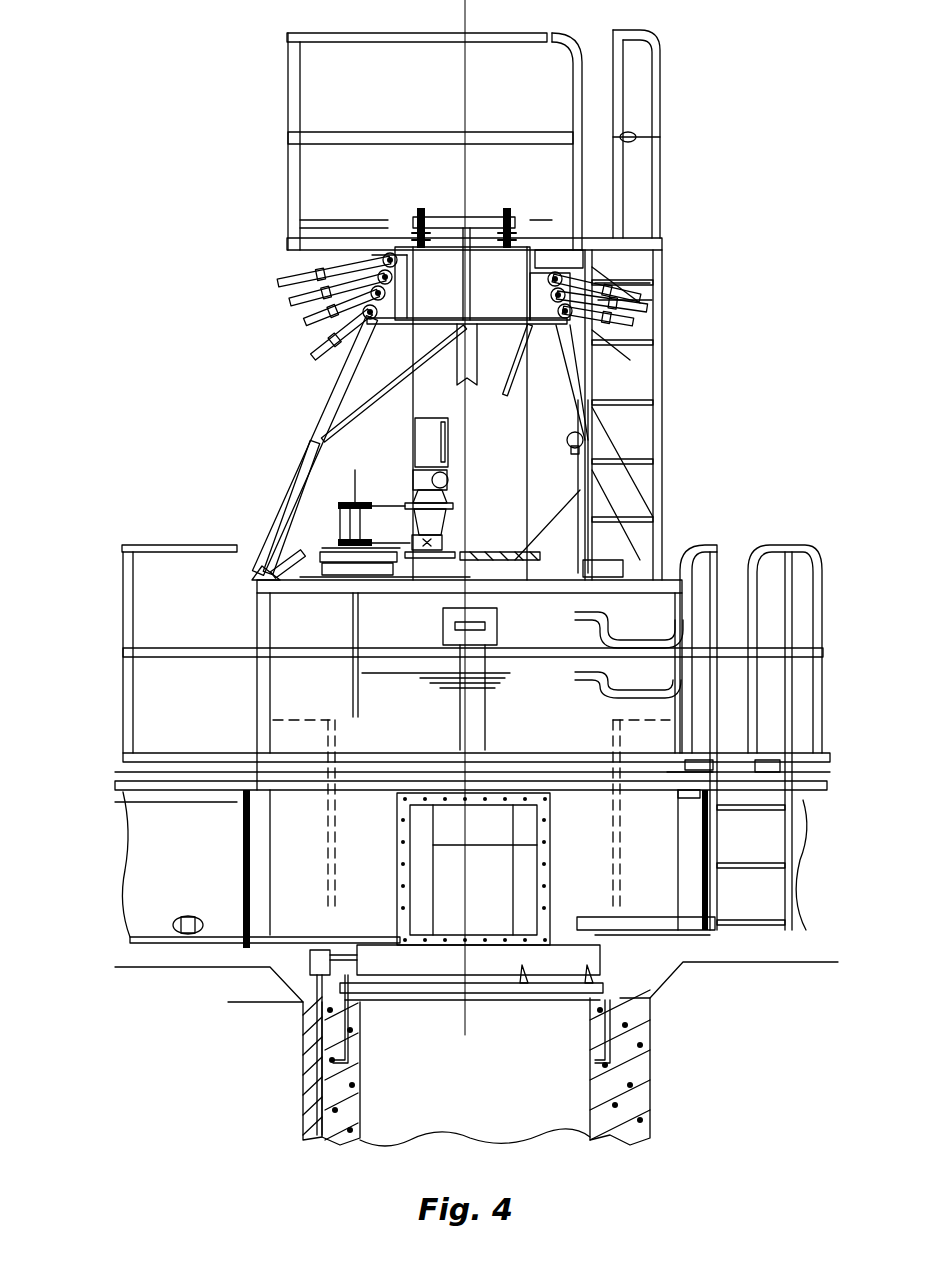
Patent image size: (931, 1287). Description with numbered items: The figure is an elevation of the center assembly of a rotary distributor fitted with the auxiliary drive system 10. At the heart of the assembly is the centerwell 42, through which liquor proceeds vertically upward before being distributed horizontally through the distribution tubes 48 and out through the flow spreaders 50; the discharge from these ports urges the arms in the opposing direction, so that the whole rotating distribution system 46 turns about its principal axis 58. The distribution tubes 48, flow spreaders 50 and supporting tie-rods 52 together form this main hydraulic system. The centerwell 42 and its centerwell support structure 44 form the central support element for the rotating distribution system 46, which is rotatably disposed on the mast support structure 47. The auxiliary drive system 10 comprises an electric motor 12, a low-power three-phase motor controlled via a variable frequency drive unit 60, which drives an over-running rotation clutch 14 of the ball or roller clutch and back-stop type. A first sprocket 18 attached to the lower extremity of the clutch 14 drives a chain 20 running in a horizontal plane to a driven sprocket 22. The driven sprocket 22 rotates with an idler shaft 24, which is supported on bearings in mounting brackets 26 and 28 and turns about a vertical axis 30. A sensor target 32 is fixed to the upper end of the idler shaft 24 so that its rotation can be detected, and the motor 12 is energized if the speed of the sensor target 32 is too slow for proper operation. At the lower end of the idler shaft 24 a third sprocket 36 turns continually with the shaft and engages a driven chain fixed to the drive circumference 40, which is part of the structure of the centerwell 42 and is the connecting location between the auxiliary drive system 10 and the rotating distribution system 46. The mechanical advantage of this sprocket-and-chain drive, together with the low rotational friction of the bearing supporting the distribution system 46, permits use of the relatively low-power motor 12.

The auxiliary drive system 10 is at (475, 492).
The electric motor 12 is at (458, 436).
The rotation clutch 14 is at (470, 538).
The first sprocket 18 is at (467, 563).
The chain 20 is at (396, 582).
The driven sprocket 22 is at (343, 548).
The idler shaft 24 is at (340, 510).
The mounting bracket 26 is at (352, 505).
The mounting bracket 28 is at (350, 540).
The vertical axis 30 is at (355, 695).
The sensor target 32 is at (305, 450).
The third sprocket 36 is at (257, 598).
The drive circumference 40 is at (633, 563).
The centerwell 42 is at (255, 750).
The centerwell support structure 44 is at (330, 393).
The rotating distribution system 46 is at (228, 975).
The mast support structure 47 is at (630, 308).
The distribution tubes 48 is at (145, 940).
The flow spreaders 50 is at (175, 925).
The tie-rods 52 is at (310, 312).
The principal axis 58 is at (463, 200).
The variable frequency drive unit 60 is at (465, 472).